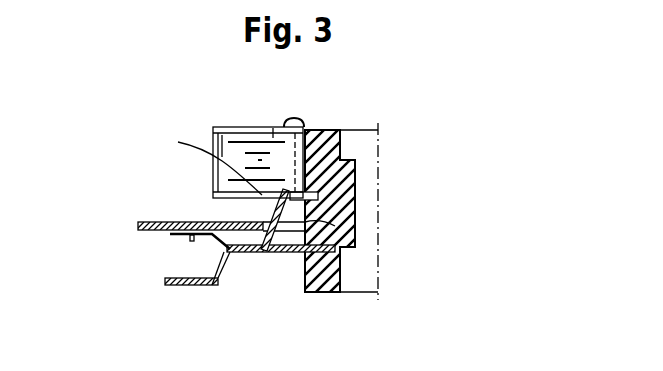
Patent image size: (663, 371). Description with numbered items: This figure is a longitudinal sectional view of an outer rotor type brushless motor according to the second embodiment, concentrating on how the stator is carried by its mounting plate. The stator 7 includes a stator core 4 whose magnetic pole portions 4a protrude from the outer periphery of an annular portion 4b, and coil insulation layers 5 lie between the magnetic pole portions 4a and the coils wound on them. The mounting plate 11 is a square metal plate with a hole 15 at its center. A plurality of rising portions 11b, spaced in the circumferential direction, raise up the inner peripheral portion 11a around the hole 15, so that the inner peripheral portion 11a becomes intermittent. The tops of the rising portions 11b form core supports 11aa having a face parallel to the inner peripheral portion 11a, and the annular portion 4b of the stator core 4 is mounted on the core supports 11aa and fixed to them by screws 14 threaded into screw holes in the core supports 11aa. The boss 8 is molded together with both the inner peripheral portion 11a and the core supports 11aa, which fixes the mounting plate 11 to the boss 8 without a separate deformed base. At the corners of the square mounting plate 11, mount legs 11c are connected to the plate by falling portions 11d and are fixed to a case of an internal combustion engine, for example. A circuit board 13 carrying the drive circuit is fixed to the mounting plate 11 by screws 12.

The stator core 4 is at (250, 138).
The magnetic pole portions 4a is at (222, 140).
The annular portion 4b is at (273, 128).
The coil insulation layers 5 is at (233, 127).
The stator 7 is at (203, 136).
The boss 8 is at (347, 183).
The mounting plate 11 is at (270, 258).
The inner peripheral portion 11a is at (345, 226).
The core supports 11aa is at (191, 157).
The rising portions 11b is at (264, 217).
The mount legs 11c is at (181, 286).
The falling portions 11d is at (222, 275).
The screws 12 is at (195, 221).
The circuit board 13 is at (170, 235).
The screws 14 is at (292, 120).
The hole 15 is at (356, 247).